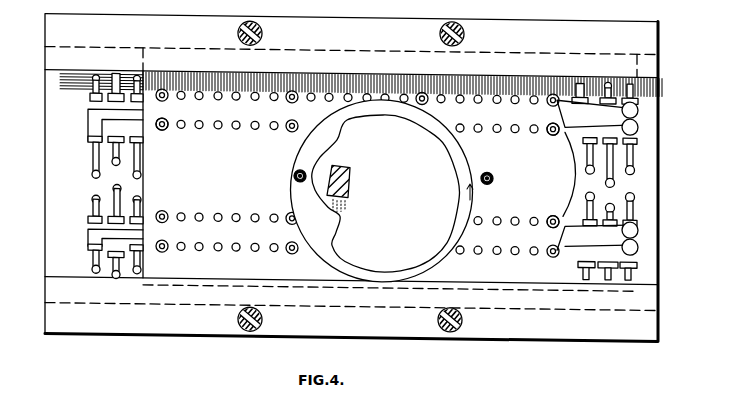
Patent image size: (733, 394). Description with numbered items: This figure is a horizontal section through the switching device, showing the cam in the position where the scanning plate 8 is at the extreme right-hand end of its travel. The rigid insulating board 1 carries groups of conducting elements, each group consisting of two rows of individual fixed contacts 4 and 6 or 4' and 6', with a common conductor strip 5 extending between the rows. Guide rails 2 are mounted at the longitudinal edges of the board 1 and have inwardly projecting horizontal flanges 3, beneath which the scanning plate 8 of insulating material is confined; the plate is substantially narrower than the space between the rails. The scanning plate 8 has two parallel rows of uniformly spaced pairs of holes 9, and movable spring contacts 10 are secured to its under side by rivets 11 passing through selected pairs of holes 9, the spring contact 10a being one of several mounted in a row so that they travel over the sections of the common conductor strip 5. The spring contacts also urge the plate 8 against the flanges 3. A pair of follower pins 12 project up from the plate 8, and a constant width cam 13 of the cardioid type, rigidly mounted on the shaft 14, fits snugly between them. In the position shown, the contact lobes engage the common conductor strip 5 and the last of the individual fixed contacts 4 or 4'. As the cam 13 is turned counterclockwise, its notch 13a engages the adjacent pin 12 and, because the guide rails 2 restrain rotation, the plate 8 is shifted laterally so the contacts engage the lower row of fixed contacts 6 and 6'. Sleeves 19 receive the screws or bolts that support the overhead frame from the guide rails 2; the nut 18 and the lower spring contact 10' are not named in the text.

The board 1 is at (52, 143).
The guide rails 2 is at (55, 32).
The horizontal flanges 3 is at (55, 62).
The individual fixed contacts 4 is at (370, 91).
The individual fixed contacts 4' is at (649, 231).
The common conductor strip 5 is at (90, 122).
The individual fixed contacts 6 is at (384, 208).
The individual fixed contacts 6' is at (629, 266).
The scanning plate 8 is at (222, 263).
The holes 9 is at (272, 126).
The movable spring contacts 10 is at (588, 134).
The lower contact spring 10' is at (569, 253).
The spring contact 10a is at (640, 108).
The rivets 11 is at (166, 126).
The follower pins 12 is at (294, 171).
The constant width cam 13 is at (462, 160).
The notch 13a is at (305, 171).
The shaft 14 is at (328, 193).
The mounting nut 18 is at (462, 317).
The sleeves 19 is at (263, 317).